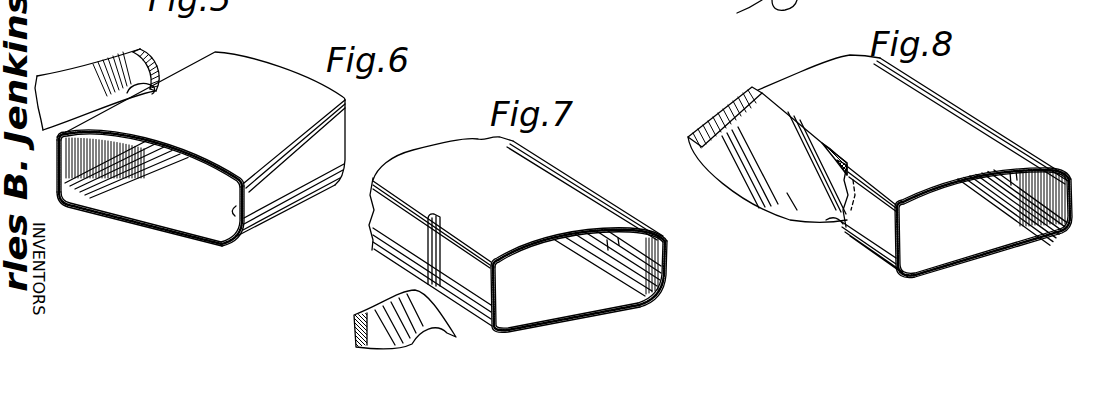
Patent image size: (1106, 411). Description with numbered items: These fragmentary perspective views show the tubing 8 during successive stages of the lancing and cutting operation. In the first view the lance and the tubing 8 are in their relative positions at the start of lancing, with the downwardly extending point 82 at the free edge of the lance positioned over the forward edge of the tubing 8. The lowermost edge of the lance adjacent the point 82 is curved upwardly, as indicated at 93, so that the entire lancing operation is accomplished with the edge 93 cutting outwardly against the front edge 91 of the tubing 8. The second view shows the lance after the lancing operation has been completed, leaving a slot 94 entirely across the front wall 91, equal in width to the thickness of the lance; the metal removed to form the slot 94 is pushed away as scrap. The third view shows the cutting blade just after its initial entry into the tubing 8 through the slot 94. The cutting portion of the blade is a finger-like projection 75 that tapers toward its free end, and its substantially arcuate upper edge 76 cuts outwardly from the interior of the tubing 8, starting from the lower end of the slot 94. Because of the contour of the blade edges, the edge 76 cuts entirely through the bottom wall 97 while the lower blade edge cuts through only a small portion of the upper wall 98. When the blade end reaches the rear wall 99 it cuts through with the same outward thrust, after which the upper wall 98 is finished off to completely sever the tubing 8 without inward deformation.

In FIG. 6, the tubing 8 is at (322, 148).
In FIG. 7, the tubing 8 is at (670, 263).
In FIG. 8, the tubing 8 is at (1012, 258).
In FIG. 6, the downwardly extending point 82 is at (162, 87).
In FIG. 7, the downwardly extending point 82 is at (453, 330).
In FIG. 6, the upwardly curved edge 93 is at (138, 94).
In FIG. 6, the front edge 91 is at (90, 163).
In FIG. 7, the front edge 91 is at (383, 252).
In FIG. 8, the front edge 91 is at (880, 244).
In FIG. 6, the upper wall 98 is at (186, 150).
In FIG. 7, the upper wall 98 is at (545, 238).
In FIG. 6, the bottom wall 97 is at (182, 243).
In FIG. 7, the bottom wall 97 is at (593, 316).
In FIG. 6, the rear wall 99 is at (240, 233).
In FIG. 7, the rear wall 99 is at (652, 274).
In FIG. 8, the rear wall 99 is at (1060, 200).
In FIG. 7, the slot 94 is at (426, 266).
In FIG. 8, the finger-like projection 75 is at (786, 148).
In FIG. 8, the upper edge 76 is at (762, 212).